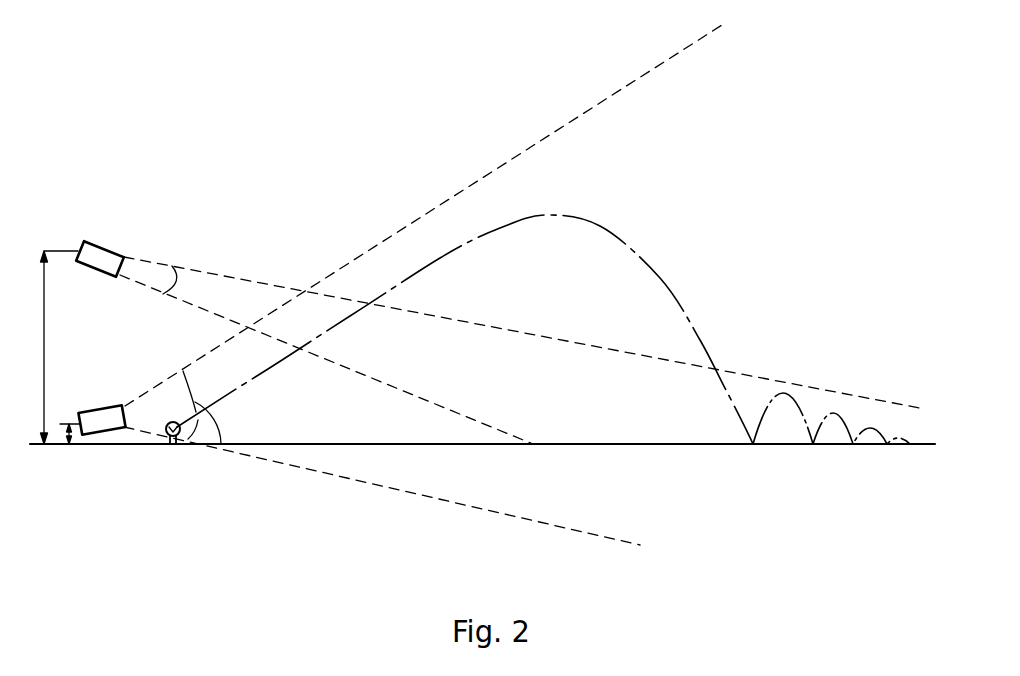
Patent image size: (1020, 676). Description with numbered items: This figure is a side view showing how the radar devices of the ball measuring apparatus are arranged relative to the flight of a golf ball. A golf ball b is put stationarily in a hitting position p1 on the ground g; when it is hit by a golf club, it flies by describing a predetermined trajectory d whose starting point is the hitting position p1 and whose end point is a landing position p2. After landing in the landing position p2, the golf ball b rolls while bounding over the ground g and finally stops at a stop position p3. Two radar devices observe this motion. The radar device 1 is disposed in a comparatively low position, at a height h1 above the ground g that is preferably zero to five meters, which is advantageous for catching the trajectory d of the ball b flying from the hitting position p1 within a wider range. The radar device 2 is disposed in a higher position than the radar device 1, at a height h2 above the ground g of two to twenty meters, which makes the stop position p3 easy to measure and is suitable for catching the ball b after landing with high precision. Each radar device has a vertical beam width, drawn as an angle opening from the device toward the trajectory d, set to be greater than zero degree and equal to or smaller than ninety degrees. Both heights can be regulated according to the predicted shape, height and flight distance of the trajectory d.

The radar device 1 is at (102, 415).
The radar device 2 is at (100, 258).
The height of the radar device 1 h1 is at (68, 430).
The height of the radar device 2 h2 is at (60, 347).
The golf ball b is at (168, 422).
The trajectory d is at (577, 222).
The ground g is at (350, 444).
The hitting position p1 is at (173, 445).
The landing position p2 is at (753, 445).
The stop position p3 is at (907, 445).